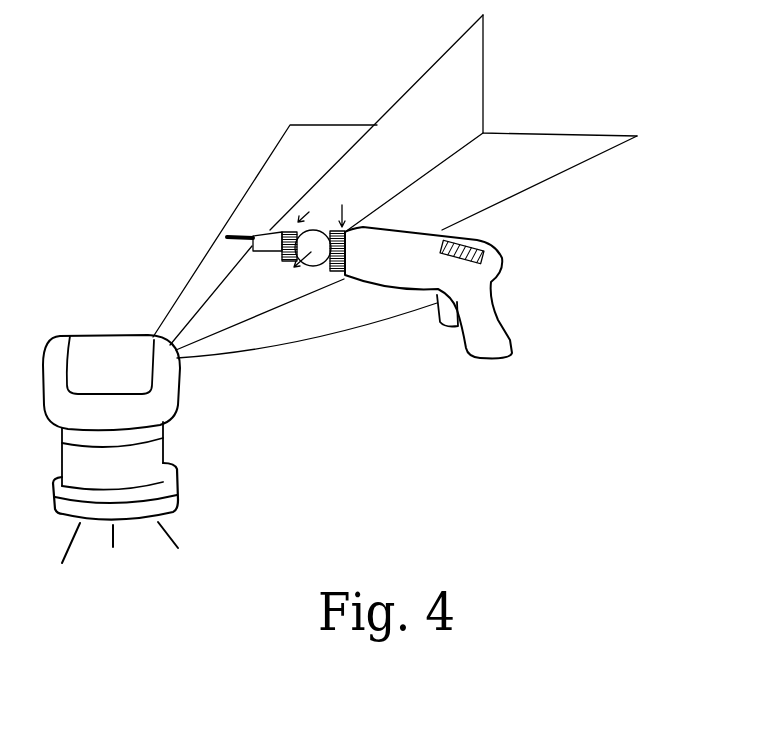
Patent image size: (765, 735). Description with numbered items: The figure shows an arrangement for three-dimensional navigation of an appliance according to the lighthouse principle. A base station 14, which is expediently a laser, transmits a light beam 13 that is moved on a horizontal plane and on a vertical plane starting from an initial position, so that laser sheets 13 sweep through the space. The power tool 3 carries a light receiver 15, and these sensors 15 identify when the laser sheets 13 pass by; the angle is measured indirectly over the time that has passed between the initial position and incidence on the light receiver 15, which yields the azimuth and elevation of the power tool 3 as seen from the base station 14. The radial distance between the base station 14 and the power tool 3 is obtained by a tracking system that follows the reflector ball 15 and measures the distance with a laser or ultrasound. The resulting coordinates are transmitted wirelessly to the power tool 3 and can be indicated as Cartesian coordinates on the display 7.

The power tool 3 is at (480, 325).
The display 7 is at (479, 244).
The light beam 13 is at (455, 114).
The base station 14 is at (117, 367).
The light receiver 15 is at (318, 245).